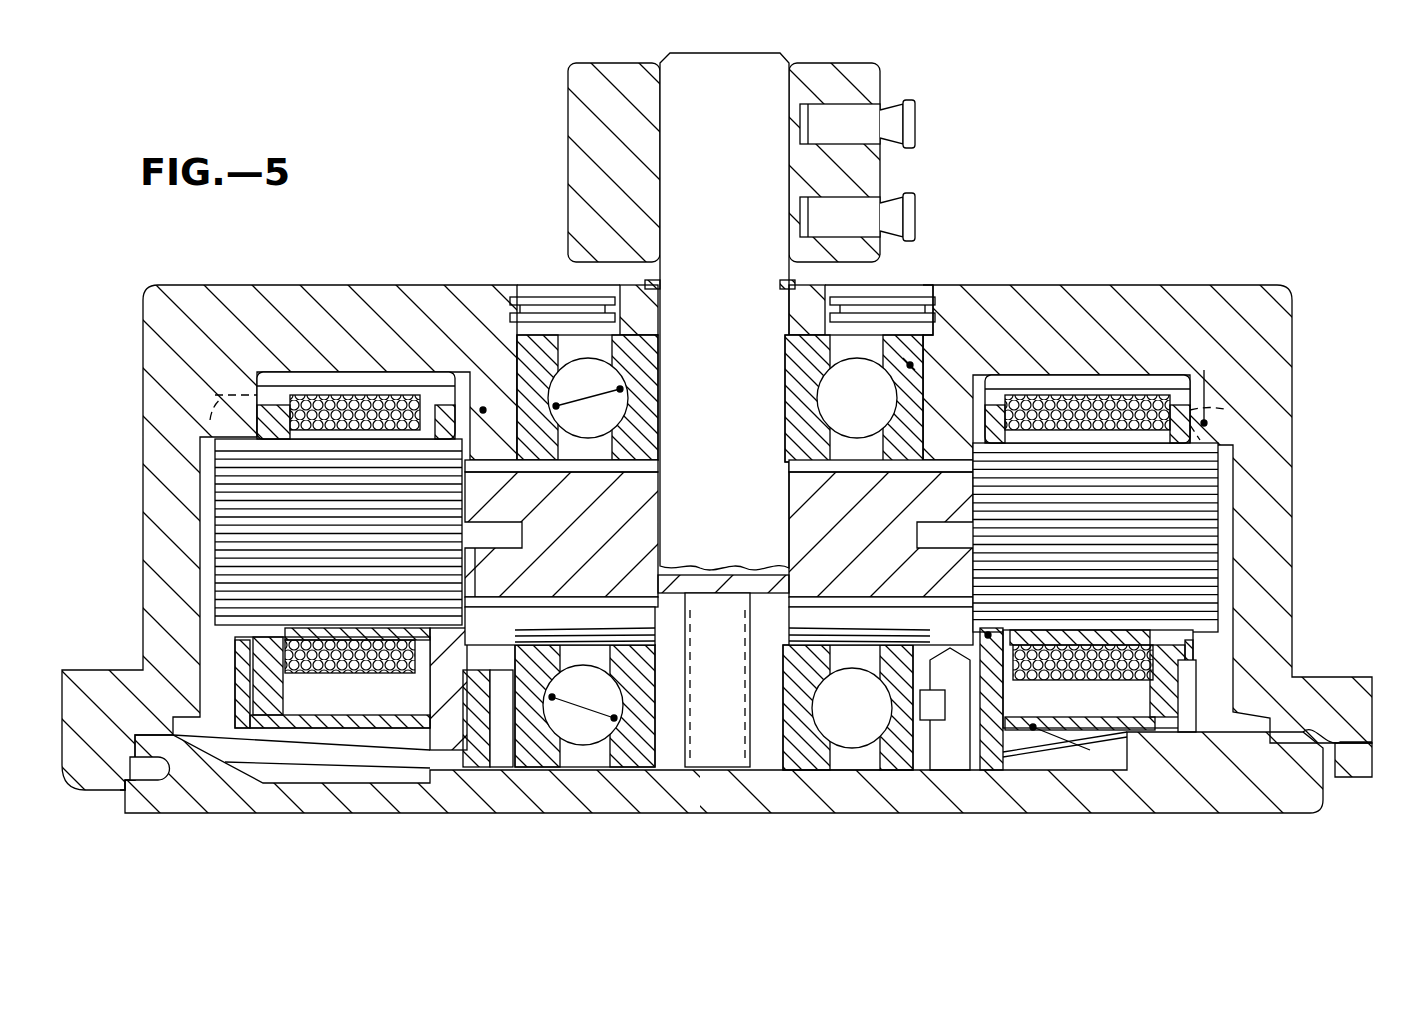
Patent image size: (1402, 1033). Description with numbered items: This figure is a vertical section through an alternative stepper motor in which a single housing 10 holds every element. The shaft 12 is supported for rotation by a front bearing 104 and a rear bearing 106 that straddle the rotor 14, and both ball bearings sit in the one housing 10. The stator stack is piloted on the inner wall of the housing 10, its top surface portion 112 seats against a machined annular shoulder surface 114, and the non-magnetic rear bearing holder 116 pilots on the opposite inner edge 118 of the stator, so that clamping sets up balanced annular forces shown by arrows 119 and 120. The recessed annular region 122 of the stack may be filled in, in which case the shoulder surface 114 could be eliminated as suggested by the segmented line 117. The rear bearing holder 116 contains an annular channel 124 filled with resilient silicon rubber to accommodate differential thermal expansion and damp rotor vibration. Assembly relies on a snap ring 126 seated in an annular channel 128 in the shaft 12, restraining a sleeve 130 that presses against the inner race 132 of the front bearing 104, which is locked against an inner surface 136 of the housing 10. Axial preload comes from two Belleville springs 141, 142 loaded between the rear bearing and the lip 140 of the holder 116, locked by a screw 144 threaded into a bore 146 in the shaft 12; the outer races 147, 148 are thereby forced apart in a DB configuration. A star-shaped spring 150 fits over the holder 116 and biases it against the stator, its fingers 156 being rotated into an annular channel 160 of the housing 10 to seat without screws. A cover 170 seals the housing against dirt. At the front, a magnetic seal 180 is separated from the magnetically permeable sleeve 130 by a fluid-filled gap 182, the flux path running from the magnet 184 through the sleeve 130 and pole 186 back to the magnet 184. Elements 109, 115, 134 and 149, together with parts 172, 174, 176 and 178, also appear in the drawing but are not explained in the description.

The housing 10 is at (1125, 292).
The shaft 12 is at (757, 90).
The rotor 14 is at (765, 509).
The front bearing 104 is at (912, 322).
The rear bearing 106 is at (546, 755).
The stator cover 109 is at (483, 410).
The top surface portion 112 is at (1235, 463).
The machined annular shoulder surface 114 is at (1220, 447).
The rotor upper hub 115 is at (462, 440).
The rear bearing holder 116 is at (988, 635).
The segmented line 117 is at (225, 418).
The inner edge 118 is at (988, 745).
The force arrow 119 is at (1033, 727).
The force arrow 120 is at (1204, 370).
The recessed annular region 122 is at (493, 440).
The annular channel 124 is at (942, 712).
The snap ring 126 is at (792, 284).
The annular channel 128 is at (640, 284).
The sleeve 130 is at (642, 310).
The inner race 132 is at (900, 335).
The inner race 134 is at (802, 742).
The inner surface 136 is at (910, 365).
The lip 140 is at (664, 778).
The Belleville spring 141 is at (508, 650).
The Belleville spring 142 is at (468, 690).
The screw 144 is at (745, 790).
The bore 146 is at (710, 612).
The outer race 147 is at (898, 682).
The outer race 148 is at (925, 330).
The bearing contact line 149 is at (575, 393).
The star-shaped spring 150 is at (378, 758).
The fingers 156 is at (1300, 732).
The annular channel 160 is at (1337, 743).
The cover 170 is at (304, 790).
The diaphragm seal 172 is at (135, 735).
The notch 174 is at (125, 795).
The O-ring 176 is at (150, 772).
The rivet 178 is at (1186, 735).
The magnetic seal 180 is at (878, 312).
The gap 182 is at (858, 330).
The magnet 184 is at (522, 313).
The pole 186 is at (536, 305).